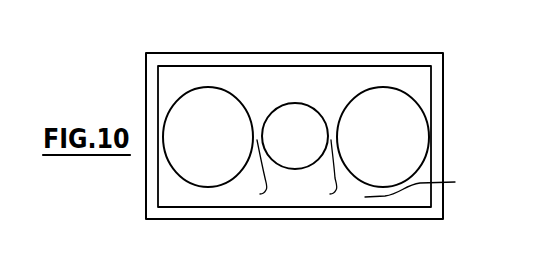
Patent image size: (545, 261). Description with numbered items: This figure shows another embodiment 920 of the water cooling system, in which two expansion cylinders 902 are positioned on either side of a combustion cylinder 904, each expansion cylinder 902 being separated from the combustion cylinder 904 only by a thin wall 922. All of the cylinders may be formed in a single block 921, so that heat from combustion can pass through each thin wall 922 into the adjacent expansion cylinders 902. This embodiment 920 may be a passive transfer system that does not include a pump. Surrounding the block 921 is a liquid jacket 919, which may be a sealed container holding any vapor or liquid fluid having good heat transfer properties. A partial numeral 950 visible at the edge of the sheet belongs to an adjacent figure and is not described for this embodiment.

The another embodiment 920 is at (145, 44).
The liquid jacket 919 is at (437, 87).
The single block 921 is at (430, 182).
The expansion cylinders 902 is at (220, 107).
The combustion cylinder 904 is at (296, 105).
The thin wall 922 is at (280, 174).
The adjacent figure element 950 is at (482, 2).